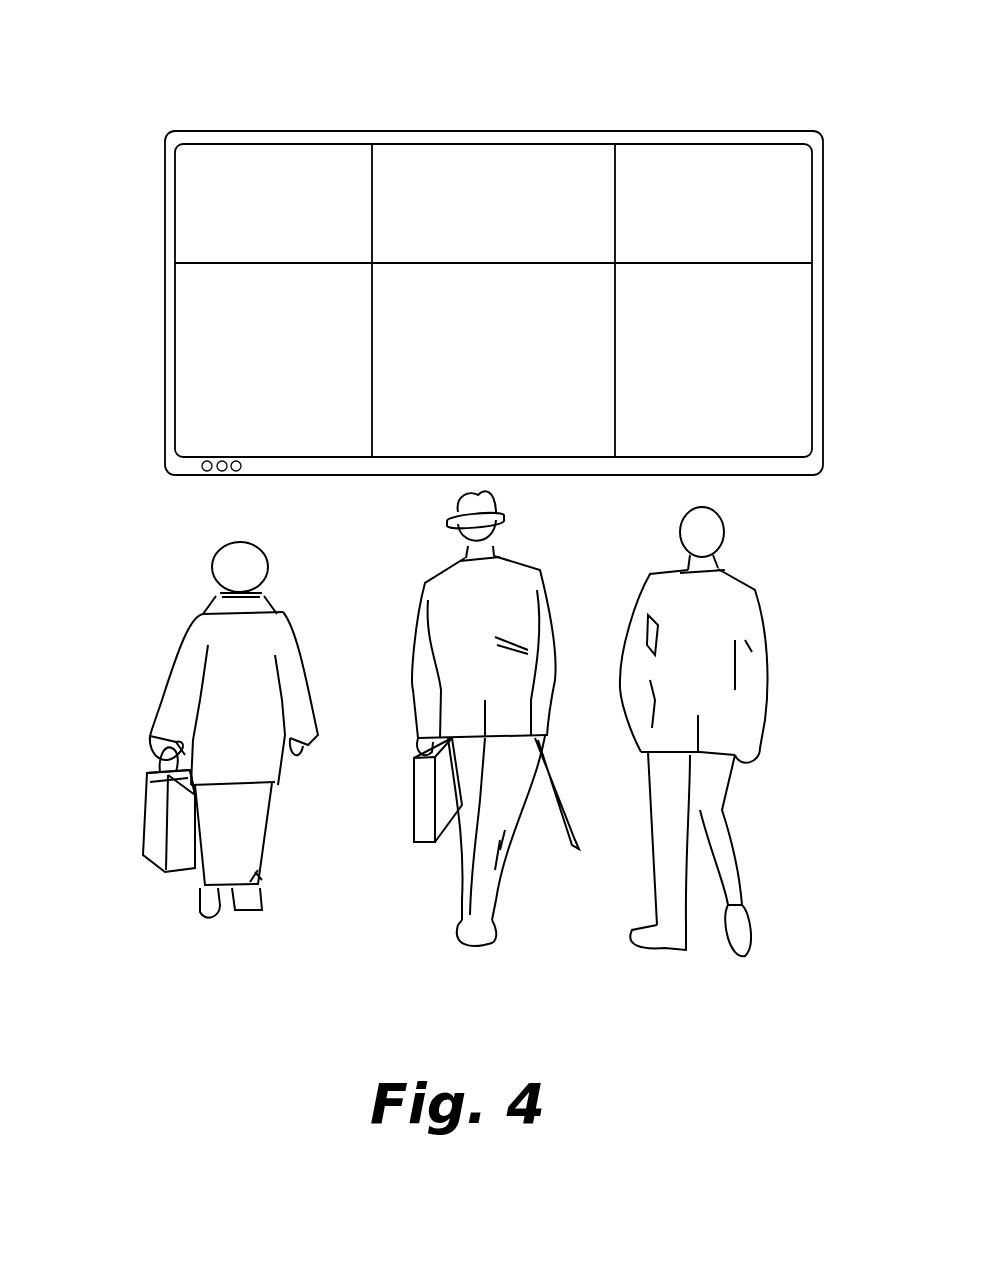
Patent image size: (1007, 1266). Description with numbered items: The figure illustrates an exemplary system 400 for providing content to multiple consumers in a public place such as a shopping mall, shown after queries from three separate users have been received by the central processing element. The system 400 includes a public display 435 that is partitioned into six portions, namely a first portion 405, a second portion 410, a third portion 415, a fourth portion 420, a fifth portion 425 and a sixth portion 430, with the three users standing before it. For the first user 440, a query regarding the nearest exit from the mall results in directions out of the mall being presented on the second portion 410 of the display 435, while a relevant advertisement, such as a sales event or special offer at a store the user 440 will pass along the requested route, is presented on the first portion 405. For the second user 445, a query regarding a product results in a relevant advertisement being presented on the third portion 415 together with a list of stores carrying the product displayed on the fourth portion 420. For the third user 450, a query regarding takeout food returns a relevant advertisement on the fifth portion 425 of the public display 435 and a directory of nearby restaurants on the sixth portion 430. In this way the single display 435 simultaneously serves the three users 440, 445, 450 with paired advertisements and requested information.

The system 400 is at (127, 88).
The first portion 405 is at (277, 168).
The second portion 410 is at (188, 440).
The third portion 415 is at (500, 163).
The fourth portion 420 is at (527, 435).
The fifth portion 425 is at (717, 158).
The sixth portion 430 is at (783, 437).
The public display 435 is at (195, 140).
The first user 440 is at (180, 613).
The second user 445 is at (428, 863).
The third user 450 is at (748, 775).